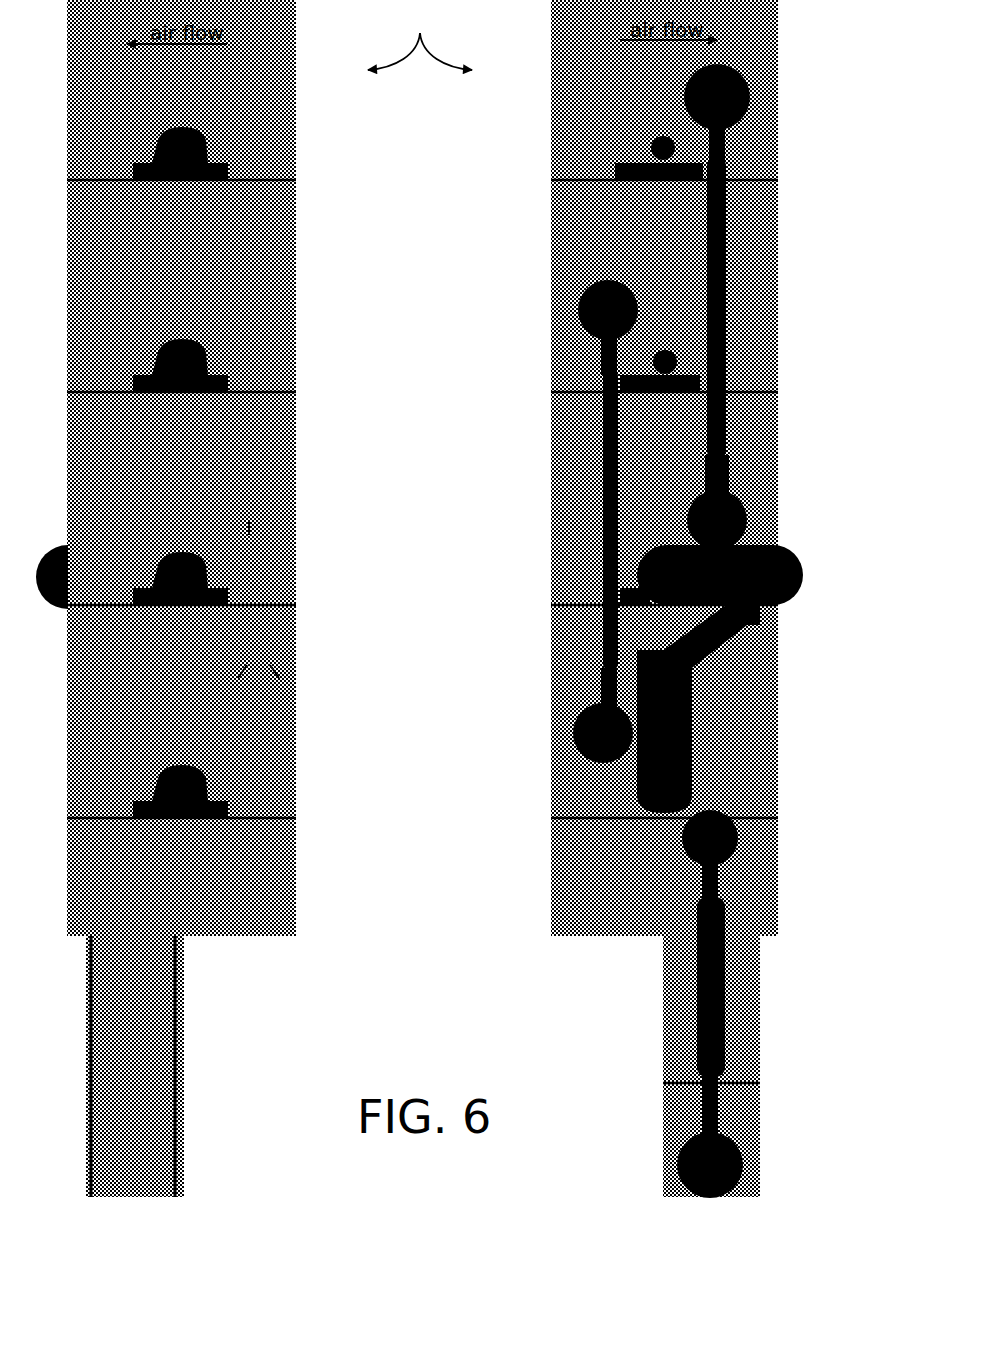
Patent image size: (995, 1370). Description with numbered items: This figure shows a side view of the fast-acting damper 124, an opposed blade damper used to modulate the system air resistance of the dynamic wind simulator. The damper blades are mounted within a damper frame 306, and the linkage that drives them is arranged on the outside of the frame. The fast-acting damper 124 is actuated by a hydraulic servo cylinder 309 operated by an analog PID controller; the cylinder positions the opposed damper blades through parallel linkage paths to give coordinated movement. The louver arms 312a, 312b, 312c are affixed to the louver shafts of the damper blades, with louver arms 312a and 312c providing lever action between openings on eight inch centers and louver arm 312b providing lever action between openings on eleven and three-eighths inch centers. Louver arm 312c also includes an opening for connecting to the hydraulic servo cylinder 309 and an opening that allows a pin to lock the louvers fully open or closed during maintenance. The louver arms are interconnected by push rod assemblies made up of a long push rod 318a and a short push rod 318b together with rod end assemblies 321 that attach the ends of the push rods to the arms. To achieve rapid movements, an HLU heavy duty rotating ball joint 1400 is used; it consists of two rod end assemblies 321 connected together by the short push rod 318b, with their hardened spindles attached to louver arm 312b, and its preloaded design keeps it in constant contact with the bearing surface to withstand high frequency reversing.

The fast-acting damper 124 is at (420, 38).
The damper frame 306 is at (280, 920).
The hydraulic servo cylinder 309 is at (690, 992).
The louver arm 312a is at (650, 323).
The louver arm 312b is at (663, 600).
The louver arm 312c is at (695, 797).
The long push rod 318a is at (722, 372).
The short push rod 318b is at (718, 637).
The rod end assembly 321 is at (722, 95).
The HLU heavy duty rotating ball joint 1400 is at (797, 630).